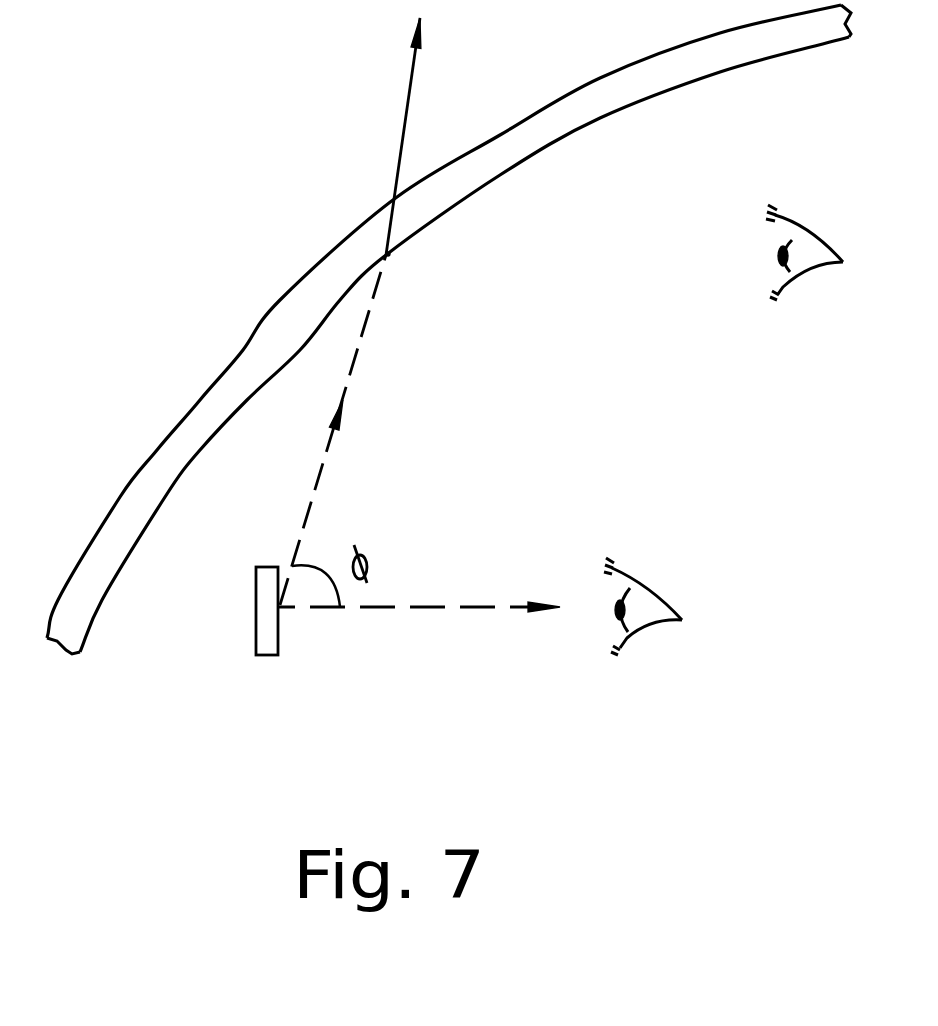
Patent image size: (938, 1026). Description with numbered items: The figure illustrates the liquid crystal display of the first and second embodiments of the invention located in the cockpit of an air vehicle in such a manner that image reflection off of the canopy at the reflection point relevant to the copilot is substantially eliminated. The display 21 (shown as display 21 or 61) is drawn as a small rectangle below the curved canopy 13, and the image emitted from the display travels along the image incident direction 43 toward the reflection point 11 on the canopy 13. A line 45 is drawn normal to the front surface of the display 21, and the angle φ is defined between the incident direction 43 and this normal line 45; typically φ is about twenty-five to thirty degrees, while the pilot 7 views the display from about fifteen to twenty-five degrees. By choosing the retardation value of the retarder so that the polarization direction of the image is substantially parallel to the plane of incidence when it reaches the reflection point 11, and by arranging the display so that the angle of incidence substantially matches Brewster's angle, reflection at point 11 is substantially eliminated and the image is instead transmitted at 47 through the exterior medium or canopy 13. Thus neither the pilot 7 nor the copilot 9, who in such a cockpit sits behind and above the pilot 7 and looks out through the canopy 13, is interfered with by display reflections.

The canopy 13 is at (590, 100).
The transmitted image 47 is at (410, 80).
The image incident direction 43 is at (322, 458).
The normal line 45 is at (445, 607).
The reflection point 11 is at (400, 272).
The display 21 is at (146, 643).
The light source 61 is at (267, 643).
The pilot 7 is at (655, 642).
The copilot 9 is at (814, 296).